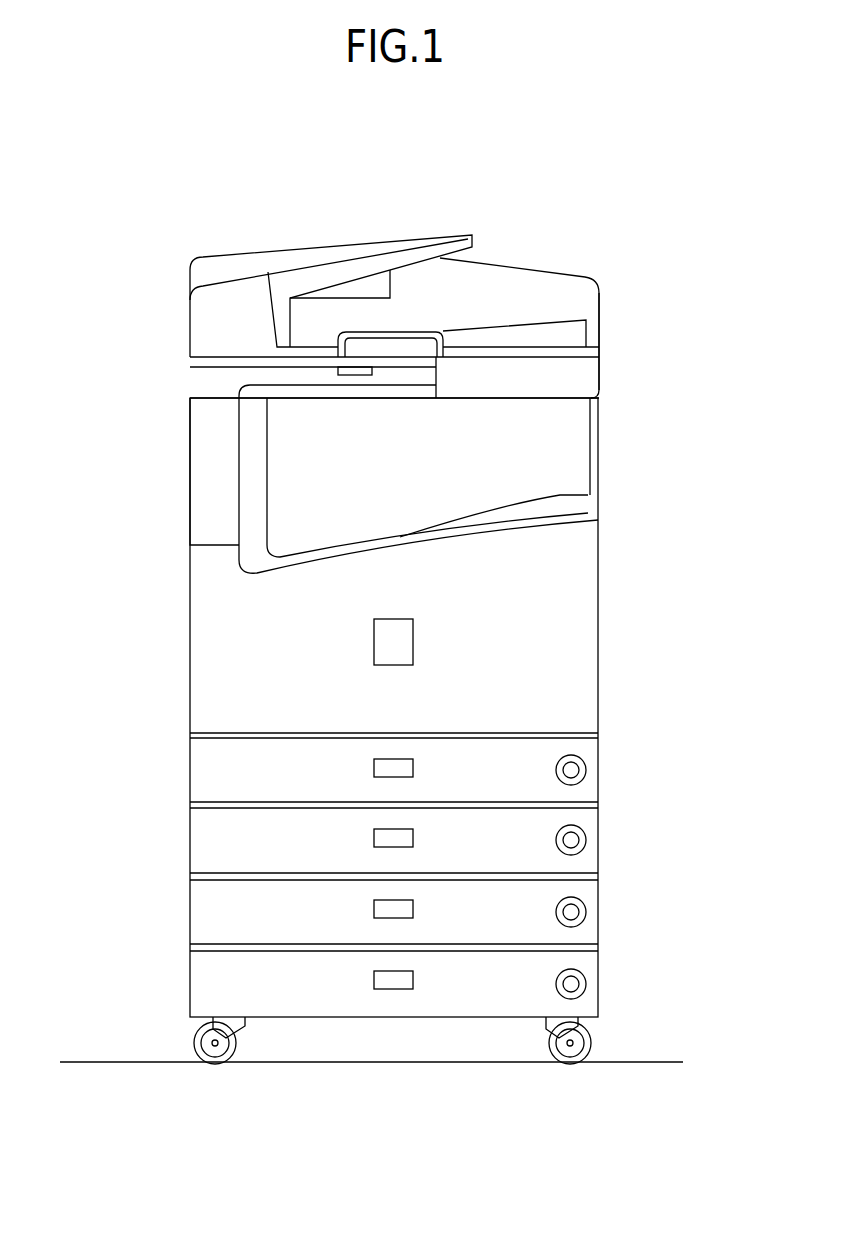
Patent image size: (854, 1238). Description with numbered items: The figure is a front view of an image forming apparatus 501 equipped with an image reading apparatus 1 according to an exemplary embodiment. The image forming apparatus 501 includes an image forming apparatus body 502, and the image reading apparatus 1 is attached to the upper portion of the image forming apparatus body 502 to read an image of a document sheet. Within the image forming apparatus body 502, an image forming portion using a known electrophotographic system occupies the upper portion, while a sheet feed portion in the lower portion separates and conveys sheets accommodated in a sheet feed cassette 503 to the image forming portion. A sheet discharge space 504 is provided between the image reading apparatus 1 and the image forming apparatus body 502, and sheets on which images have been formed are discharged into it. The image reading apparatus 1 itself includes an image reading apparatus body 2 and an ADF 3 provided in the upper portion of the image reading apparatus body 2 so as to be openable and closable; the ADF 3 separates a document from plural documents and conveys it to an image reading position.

The image reading apparatus 1 is at (682, 250).
The image reading apparatus body 2 is at (590, 378).
The ADF 3 is at (603, 273).
The image forming apparatus 501 is at (624, 591).
The image forming apparatus body 502 is at (188, 490).
The sheet feed cassette 503 is at (212, 912).
The sheet discharge space 504 is at (418, 479).